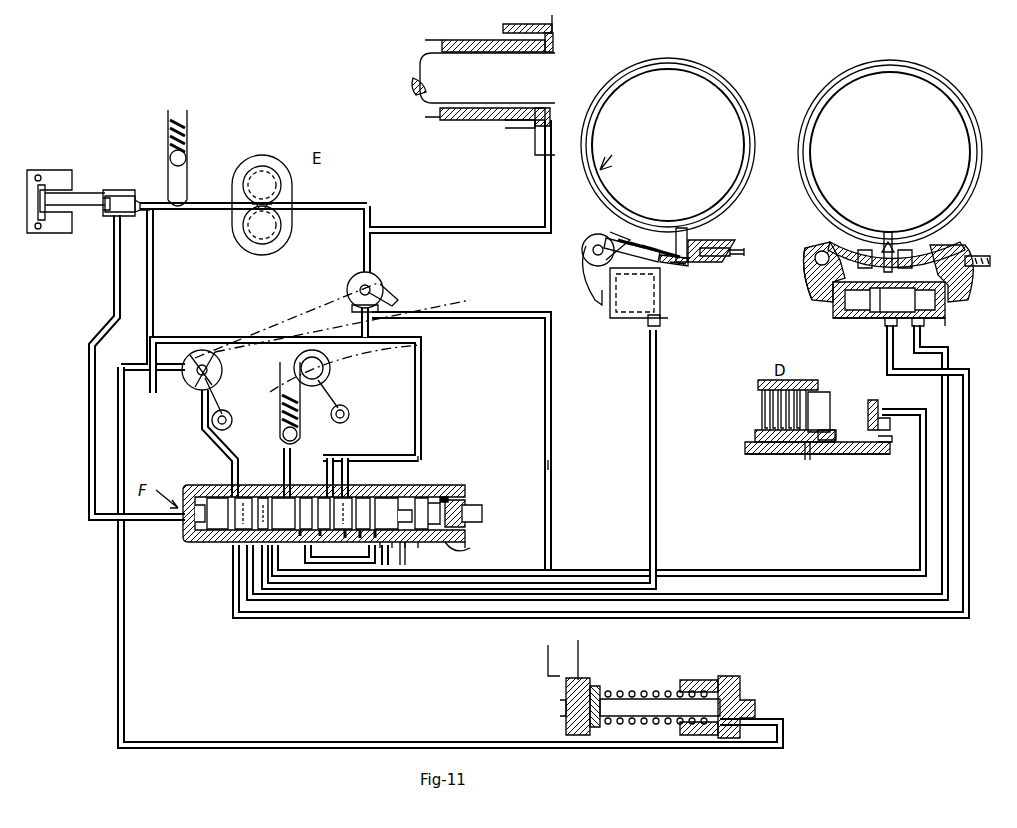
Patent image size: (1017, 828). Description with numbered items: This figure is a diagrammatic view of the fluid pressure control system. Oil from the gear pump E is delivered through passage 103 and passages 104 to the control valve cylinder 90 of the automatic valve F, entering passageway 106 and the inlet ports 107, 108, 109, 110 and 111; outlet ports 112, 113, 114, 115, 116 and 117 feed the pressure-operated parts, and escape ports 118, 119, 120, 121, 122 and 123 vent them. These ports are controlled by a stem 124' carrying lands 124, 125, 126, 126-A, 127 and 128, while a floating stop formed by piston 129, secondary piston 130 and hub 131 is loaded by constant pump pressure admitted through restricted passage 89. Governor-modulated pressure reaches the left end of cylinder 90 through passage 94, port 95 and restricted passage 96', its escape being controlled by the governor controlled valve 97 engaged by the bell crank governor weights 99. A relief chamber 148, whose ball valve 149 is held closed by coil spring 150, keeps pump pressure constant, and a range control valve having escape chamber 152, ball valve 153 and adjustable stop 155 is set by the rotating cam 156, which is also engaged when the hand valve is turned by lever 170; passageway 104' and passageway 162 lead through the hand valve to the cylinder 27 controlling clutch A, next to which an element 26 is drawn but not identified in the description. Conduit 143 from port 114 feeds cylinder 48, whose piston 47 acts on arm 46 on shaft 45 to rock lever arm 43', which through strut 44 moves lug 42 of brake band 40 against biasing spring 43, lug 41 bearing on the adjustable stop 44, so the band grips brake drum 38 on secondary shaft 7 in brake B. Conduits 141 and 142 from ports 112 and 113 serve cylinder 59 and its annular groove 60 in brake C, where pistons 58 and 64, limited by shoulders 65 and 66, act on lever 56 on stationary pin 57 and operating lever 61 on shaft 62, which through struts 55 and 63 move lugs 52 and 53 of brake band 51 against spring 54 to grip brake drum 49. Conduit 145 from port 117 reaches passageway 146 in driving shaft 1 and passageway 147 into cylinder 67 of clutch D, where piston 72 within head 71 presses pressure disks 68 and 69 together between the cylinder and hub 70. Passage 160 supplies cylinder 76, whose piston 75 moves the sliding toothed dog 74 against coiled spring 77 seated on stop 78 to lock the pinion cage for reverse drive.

The driving shaft 1 is at (430, 82).
The secondary shaft 7 is at (440, 115).
The seal 26 is at (525, 124).
The cylinder 27 is at (538, 142).
The brake drum 38 is at (745, 80).
The brake band 40 is at (742, 96).
The operating lug 41 is at (705, 262).
The operating lug 42 is at (680, 228).
The biasing spring 43 is at (680, 279).
The lever arm 43' is at (610, 231).
The strut 44 is at (645, 232).
The shaft 45 is at (590, 254).
The second lever or arm 46 is at (592, 282).
The piston 47 is at (606, 316).
The cylinder 48 is at (648, 322).
The brake drum 49 is at (975, 150).
The brake band 51 is at (982, 122).
The lug 52 is at (910, 265).
The lug 53 is at (869, 265).
The spring 54 is at (887, 232).
The strut 55 is at (920, 250).
The lever 56 is at (958, 246).
The stationary pin 57 is at (979, 251).
The piston 58 is at (945, 310).
The cylinder 59 is at (940, 325).
The annular groove 60 is at (935, 326).
The operating lever 61 is at (812, 288).
The shaft 62 is at (815, 262).
The strut 63 is at (830, 245).
The piston 64 is at (833, 305).
The shoulder 65 is at (833, 318).
The shoulder 66 is at (892, 300).
The cylinder 67 is at (816, 382).
The pressure disks 68 is at (790, 380).
The pressure disks 69 is at (760, 452).
The hub or sleeve 70 is at (755, 438).
The head 71 is at (826, 420).
The piston 72 is at (818, 410).
The sliding toothed dog 74 is at (566, 690).
The piston 75 is at (716, 740).
The cylinder 76 is at (685, 680).
The coiled spring 77 is at (640, 690).
The stop 78 is at (592, 686).
The restricted passage 89 is at (420, 458).
The control valve cylinder 90 is at (472, 548).
The passage 94 is at (125, 200).
The port 95 is at (138, 202).
The restricted passage 96' is at (120, 366).
The governor controlled valve 97 is at (92, 200).
The bell crank governor weights 99 is at (62, 232).
The passage 103 is at (155, 318).
The passages 104 is at (285, 402).
The passageway 104' is at (571, 457).
The passageway 106 is at (284, 497).
The inlet port 107 is at (243, 490).
The inlet port 108 is at (306, 500).
The inlet port 109 is at (342, 500).
The inlet port 110 is at (384, 500).
The inlet port 111 is at (440, 486).
The outlet port 112 is at (262, 530).
The outlet port 113 is at (300, 538).
The outlet port 114 is at (345, 540).
The outlet port 115 is at (360, 540).
The outlet port 116 is at (380, 548).
The outlet port 117 is at (392, 548).
The pressure escape port 118 is at (200, 540).
The pressure escape port 119 is at (320, 538).
The pressure escape port 120 is at (395, 413).
The pressure escape port 121 is at (435, 470).
The pressure escape port 122 is at (375, 540).
The pressure escape port 123 is at (403, 568).
The valve land 124 is at (180, 522).
The valve stem 124' is at (166, 518).
The valve land 125 is at (245, 505).
The valve land 126 is at (324, 500).
The valve land 126-A is at (362, 500).
The valve land 127 is at (462, 498).
The valve land 128 is at (460, 504).
The piston 129 is at (468, 516).
The secondary piston 130 is at (418, 548).
The hub 131 is at (405, 548).
The conduit 141 is at (292, 612).
The conduit 142 is at (720, 596).
The conduit 143 is at (583, 578).
The conduit 145 is at (674, 576).
The passageway 146 is at (830, 456).
The passageway 147 is at (805, 460).
The relief chamber 148 is at (187, 111).
The ball valve 149 is at (187, 156).
The coil spring 150 is at (187, 136).
The escape chamber 152 is at (325, 382).
The ball valve 153 is at (292, 430).
The adjustable stop 155 is at (325, 360).
The rotating cam 156 is at (314, 345).
The passage 160 is at (402, 744).
The passageway 162 is at (520, 233).
The lever 170 is at (233, 418).